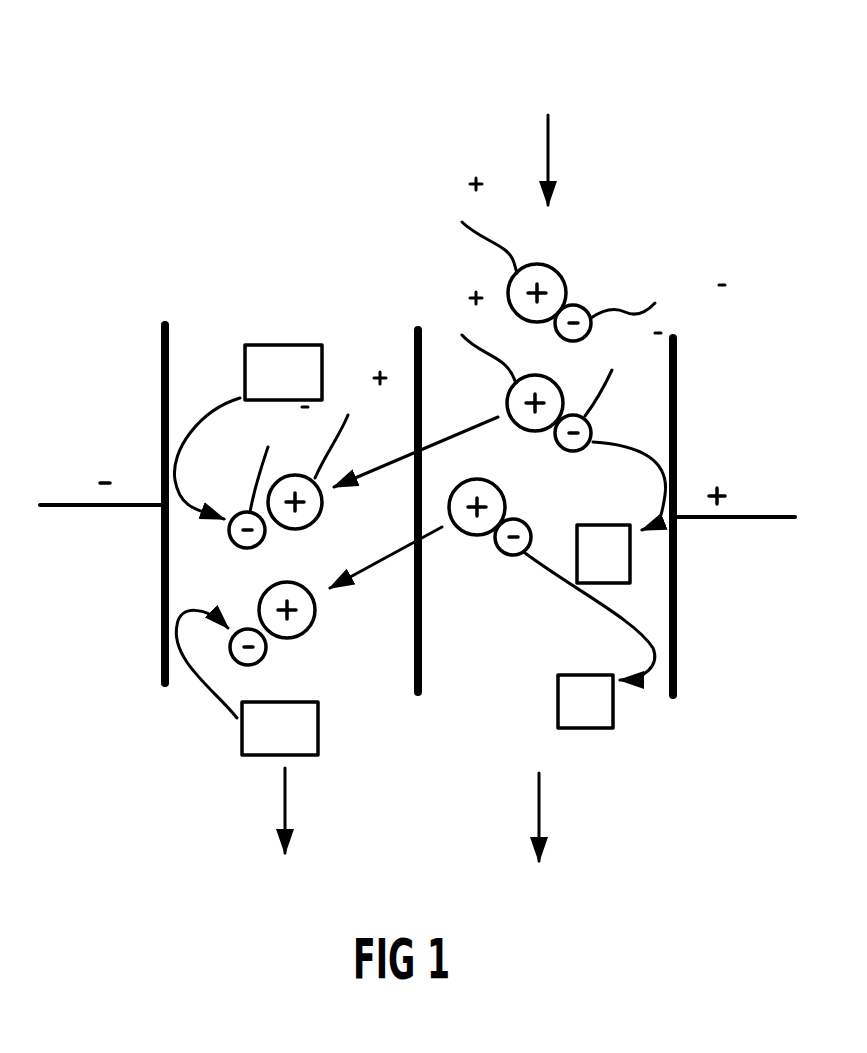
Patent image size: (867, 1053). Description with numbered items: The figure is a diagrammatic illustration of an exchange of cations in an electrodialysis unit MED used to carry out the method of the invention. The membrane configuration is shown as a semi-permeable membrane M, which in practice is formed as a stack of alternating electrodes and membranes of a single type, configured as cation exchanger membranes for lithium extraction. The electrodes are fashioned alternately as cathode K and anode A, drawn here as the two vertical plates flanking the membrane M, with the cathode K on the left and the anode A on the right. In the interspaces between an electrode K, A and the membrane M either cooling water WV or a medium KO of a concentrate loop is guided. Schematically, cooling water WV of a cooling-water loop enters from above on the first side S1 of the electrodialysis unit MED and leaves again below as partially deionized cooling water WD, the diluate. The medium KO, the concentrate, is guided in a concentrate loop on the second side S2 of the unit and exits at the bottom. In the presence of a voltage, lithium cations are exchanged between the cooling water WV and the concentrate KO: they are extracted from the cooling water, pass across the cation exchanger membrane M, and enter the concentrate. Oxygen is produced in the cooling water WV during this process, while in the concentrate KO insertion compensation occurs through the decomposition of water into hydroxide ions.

The electrodialysis unit MED is at (233, 157).
The second side S2 is at (218, 278).
The first side S1 is at (620, 287).
The semi-permeable membrane M is at (410, 345).
The cathode K is at (70, 502).
The anode A is at (765, 514).
The cooling water WV is at (549, 143).
The partially deionized cooling water WD is at (541, 800).
The medium of a concentrate loop KO is at (285, 793).